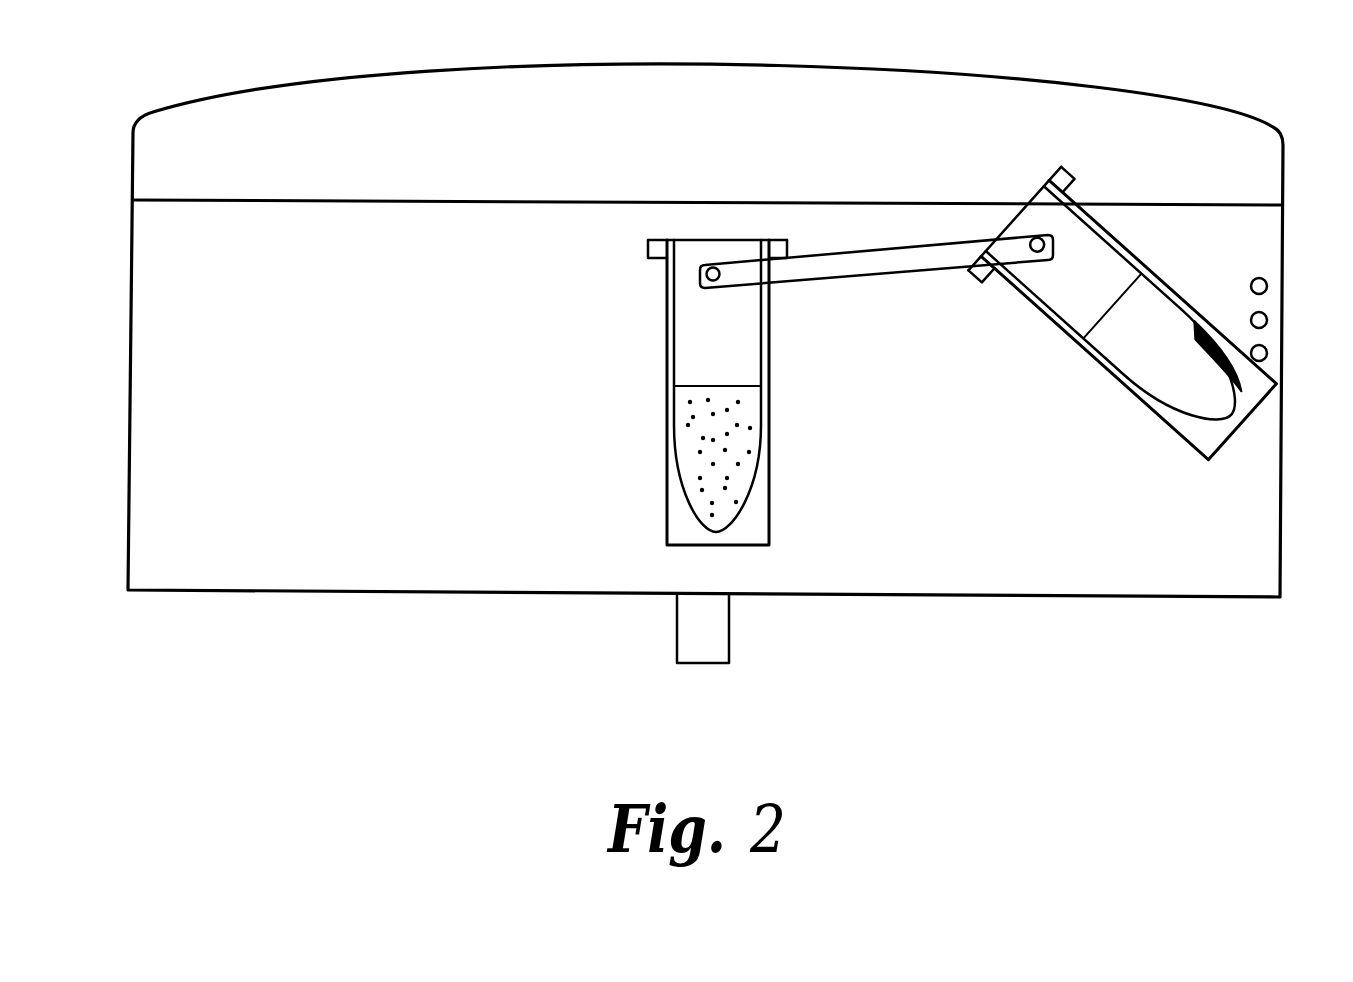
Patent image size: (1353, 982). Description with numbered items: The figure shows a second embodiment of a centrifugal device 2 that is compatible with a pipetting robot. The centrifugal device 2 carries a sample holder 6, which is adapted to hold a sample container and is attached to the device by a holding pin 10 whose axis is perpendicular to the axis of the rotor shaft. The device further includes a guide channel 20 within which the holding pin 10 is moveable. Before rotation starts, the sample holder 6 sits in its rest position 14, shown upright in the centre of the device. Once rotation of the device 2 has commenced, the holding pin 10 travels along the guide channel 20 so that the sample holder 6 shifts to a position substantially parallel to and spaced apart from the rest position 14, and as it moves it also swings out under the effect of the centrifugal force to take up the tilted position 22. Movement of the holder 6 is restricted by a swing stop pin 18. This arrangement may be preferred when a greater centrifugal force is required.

The centrifugal device 2 is at (118, 406).
The sample holder 6 is at (693, 332).
The holding pin 10 is at (708, 268).
The rest position 14 is at (747, 535).
The swing stop pin 18 is at (1267, 352).
The guide channel 20 is at (909, 262).
The swung-out position 22 is at (1258, 392).